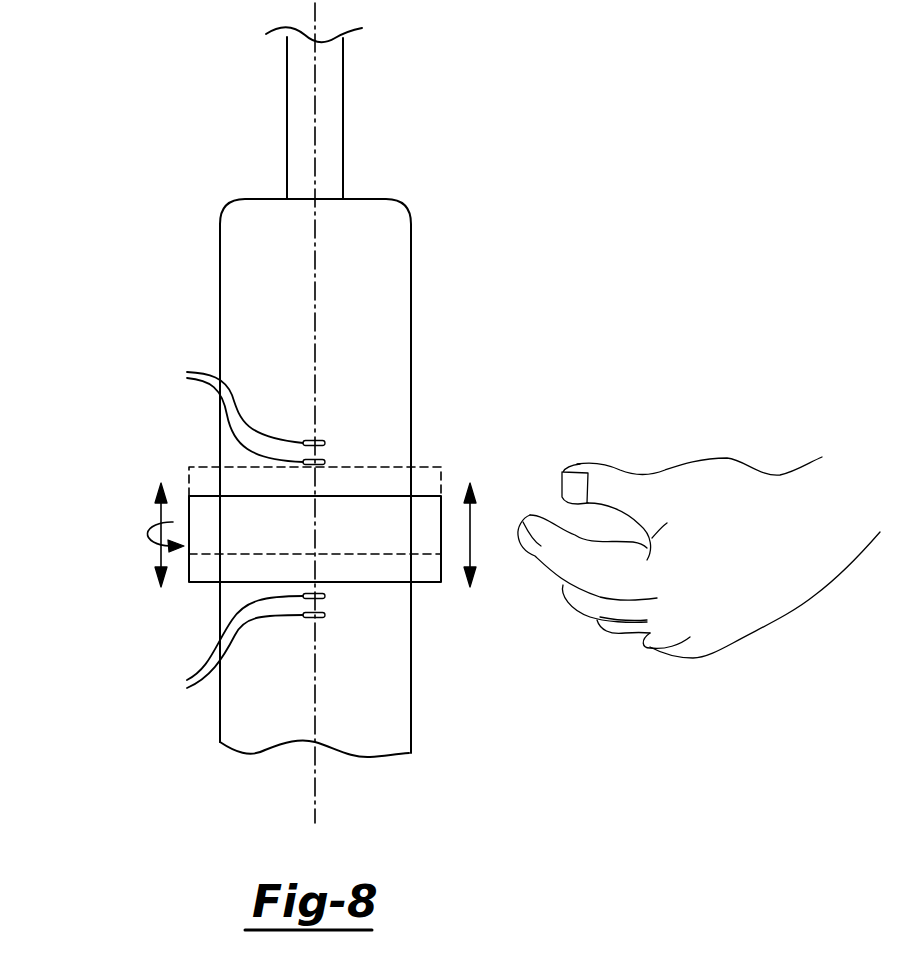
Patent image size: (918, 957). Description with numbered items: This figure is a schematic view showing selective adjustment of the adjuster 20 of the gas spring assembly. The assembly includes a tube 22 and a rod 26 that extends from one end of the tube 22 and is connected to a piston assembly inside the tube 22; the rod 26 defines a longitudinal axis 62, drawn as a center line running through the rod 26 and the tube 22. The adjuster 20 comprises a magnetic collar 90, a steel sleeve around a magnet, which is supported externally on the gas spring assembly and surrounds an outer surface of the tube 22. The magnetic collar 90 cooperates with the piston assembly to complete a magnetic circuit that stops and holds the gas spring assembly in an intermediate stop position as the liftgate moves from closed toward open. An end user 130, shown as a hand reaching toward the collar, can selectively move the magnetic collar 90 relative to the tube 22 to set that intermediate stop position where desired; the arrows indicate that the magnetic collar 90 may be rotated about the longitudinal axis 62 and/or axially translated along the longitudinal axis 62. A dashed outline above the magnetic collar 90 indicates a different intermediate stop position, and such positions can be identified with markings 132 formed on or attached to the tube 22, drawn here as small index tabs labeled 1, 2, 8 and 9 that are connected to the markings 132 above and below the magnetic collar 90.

The adjuster 20 is at (88, 479).
The tube 22 is at (400, 315).
The rod 26 is at (335, 117).
The longitudinal axis 62 is at (315, 782).
The magnetic collar 90 is at (441, 582).
The end user 130 is at (738, 478).
The markings 132 is at (225, 532).
The sensor 1 is at (324, 437).
The sensor 2 is at (324, 459).
The sensor 8 is at (324, 597).
The sensor 9 is at (324, 617).